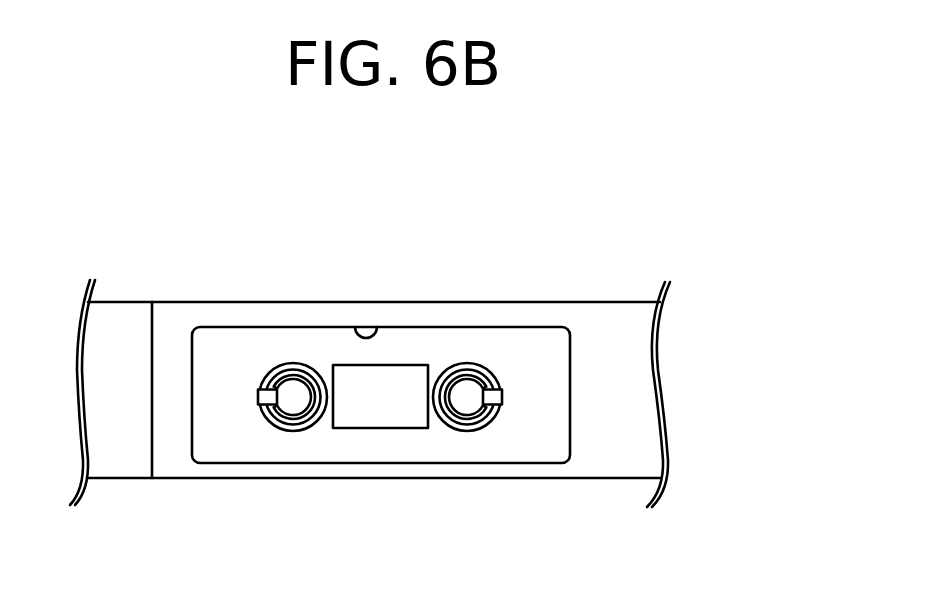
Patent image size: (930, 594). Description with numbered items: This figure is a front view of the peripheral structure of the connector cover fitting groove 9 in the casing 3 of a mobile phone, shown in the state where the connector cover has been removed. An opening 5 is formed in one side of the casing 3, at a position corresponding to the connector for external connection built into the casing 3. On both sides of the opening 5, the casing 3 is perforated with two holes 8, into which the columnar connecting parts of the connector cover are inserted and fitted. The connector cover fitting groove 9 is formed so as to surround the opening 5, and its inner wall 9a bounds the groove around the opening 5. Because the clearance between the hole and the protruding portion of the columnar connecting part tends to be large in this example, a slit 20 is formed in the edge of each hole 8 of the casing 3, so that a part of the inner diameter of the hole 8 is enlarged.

The casing 3 is at (125, 317).
The opening 5 is at (370, 407).
The hole 8 is at (302, 407).
The connector cover fitting groove 9 is at (509, 350).
The inner wall 9a is at (380, 323).
The slit 20 is at (267, 416).